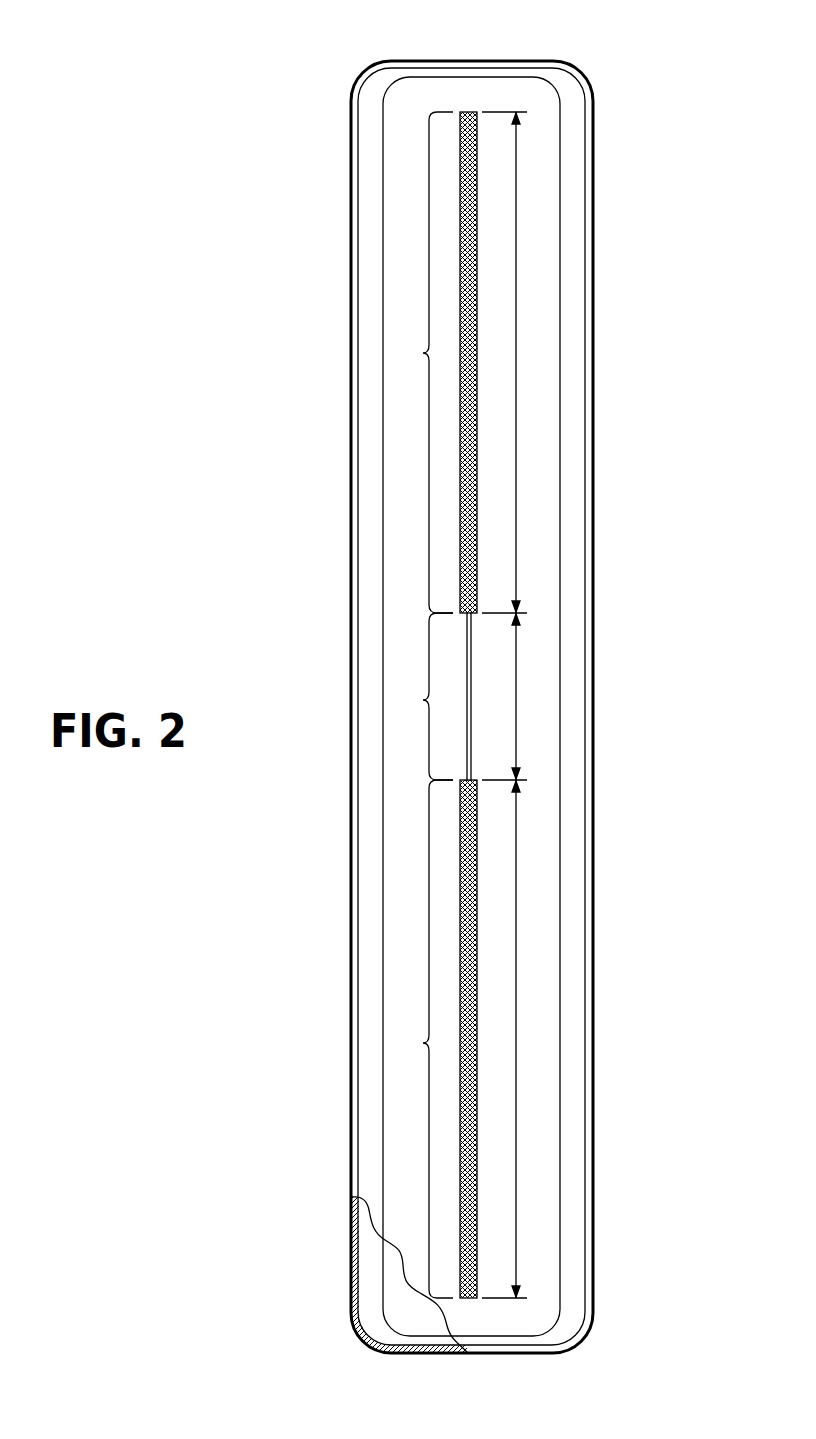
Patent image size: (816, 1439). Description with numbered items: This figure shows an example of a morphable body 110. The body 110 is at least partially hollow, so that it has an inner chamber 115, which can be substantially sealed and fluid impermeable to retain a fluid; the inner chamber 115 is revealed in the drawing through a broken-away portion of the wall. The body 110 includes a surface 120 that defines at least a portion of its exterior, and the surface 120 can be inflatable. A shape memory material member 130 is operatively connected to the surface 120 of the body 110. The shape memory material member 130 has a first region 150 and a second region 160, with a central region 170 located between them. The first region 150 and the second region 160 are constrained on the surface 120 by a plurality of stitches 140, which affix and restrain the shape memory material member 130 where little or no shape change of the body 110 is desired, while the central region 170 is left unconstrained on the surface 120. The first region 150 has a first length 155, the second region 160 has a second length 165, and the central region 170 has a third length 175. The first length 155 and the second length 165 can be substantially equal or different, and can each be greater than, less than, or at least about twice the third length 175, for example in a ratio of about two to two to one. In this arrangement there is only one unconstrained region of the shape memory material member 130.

The body 110 is at (308, 156).
The inner chamber 115 is at (385, 1303).
The surface 120 is at (550, 186).
The shape memory material member 130 is at (470, 665).
The stitches 140 is at (470, 112).
The first region 150 is at (415, 362).
The first length 155 is at (516, 358).
The second region 160 is at (415, 1039).
The second length 165 is at (516, 1043).
The central region 170 is at (415, 696).
The third length 175 is at (516, 706).